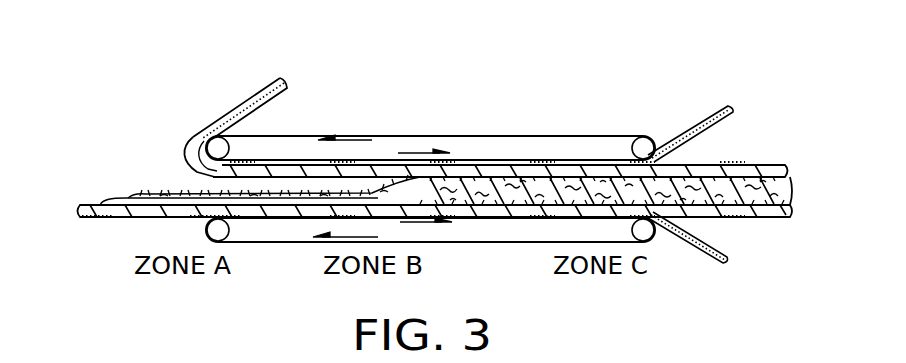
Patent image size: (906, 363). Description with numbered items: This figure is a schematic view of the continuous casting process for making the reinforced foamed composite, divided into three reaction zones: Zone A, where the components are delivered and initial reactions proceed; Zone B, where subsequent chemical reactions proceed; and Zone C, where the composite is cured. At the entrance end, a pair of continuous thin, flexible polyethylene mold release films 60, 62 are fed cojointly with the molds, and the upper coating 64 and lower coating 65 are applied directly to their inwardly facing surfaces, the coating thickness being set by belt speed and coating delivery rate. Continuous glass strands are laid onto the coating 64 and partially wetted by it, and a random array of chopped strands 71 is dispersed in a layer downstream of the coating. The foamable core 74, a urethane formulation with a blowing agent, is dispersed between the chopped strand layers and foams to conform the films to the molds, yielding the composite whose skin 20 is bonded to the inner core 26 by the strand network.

The skin 20 is at (727, 156).
The inner core 26 is at (795, 188).
The mold release film 60 is at (122, 218).
The mold release film 62 is at (283, 108).
The upper coating 64 is at (210, 124).
The lower coating 65 is at (95, 204).
The chopped strands 71 is at (182, 193).
The foamable core 74 is at (147, 203).